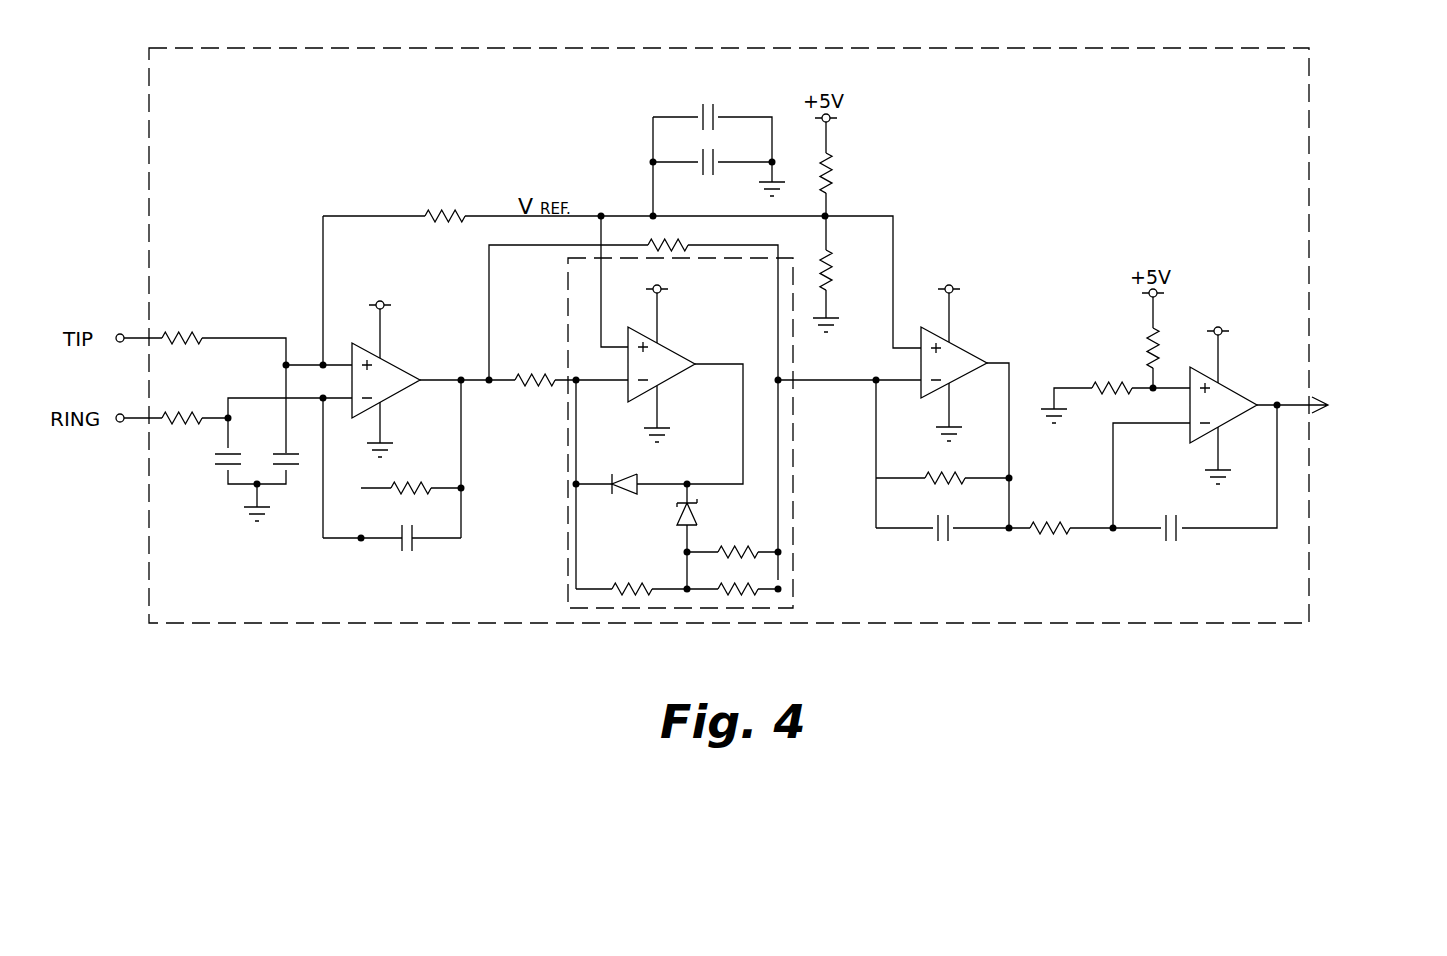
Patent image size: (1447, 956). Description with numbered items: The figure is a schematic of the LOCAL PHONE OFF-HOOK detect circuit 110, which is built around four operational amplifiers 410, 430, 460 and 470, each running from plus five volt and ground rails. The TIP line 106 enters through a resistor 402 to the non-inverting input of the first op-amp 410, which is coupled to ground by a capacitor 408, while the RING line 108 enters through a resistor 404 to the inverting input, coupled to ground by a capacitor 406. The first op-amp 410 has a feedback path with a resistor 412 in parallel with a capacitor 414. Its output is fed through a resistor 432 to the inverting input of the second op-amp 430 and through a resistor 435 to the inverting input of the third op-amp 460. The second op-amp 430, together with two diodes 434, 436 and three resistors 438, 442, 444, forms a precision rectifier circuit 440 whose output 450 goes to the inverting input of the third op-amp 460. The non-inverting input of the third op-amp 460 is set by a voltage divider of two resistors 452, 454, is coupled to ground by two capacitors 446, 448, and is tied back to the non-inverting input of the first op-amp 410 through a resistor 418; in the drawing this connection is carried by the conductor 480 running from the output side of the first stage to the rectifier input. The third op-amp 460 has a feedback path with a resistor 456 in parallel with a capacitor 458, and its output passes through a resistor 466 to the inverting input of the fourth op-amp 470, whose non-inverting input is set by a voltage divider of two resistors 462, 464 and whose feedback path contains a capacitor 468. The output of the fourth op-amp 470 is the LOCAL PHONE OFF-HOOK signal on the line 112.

The TIP line 106 is at (138, 338).
The RING line 108 is at (129, 424).
The LOCAL PHONE OFF-HOOK detect circuit 110 is at (1142, 48).
The line 112 is at (1334, 416).
The resistor 402 is at (198, 336).
The resistor 404 is at (179, 412).
The capacitor 406 is at (214, 460).
The capacitor 408 is at (318, 460).
The first operational amplifier 410 is at (390, 364).
The resistor 412 is at (432, 485).
The capacitor 414 is at (409, 567).
The resistor 418 is at (445, 215).
The second operational amplifier 430 is at (676, 358).
The resistor 432 is at (535, 375).
The diode 434 is at (624, 495).
The resistor 435 is at (686, 245).
The diode 436 is at (696, 520).
The resistor 438 is at (643, 584).
The precision rectifier circuit 440 is at (793, 496).
The resistor 442 is at (780, 552).
The resistor 444 is at (780, 589).
The capacitor 446 is at (701, 110).
The capacitor 448 is at (700, 184).
The output 450 is at (848, 382).
The resistor 452 is at (836, 178).
The resistor 454 is at (836, 272).
The resistor 456 is at (946, 472).
The capacitor 458 is at (950, 540).
The third operational amplifier 460 is at (964, 359).
The resistor 462 is at (1113, 377).
The resistor 464 is at (1142, 356).
The resistor 466 is at (1053, 517).
The capacitor 468 is at (1180, 542).
The fourth operational amplifier 470 is at (1219, 391).
The feedback conductor 480 is at (489, 300).